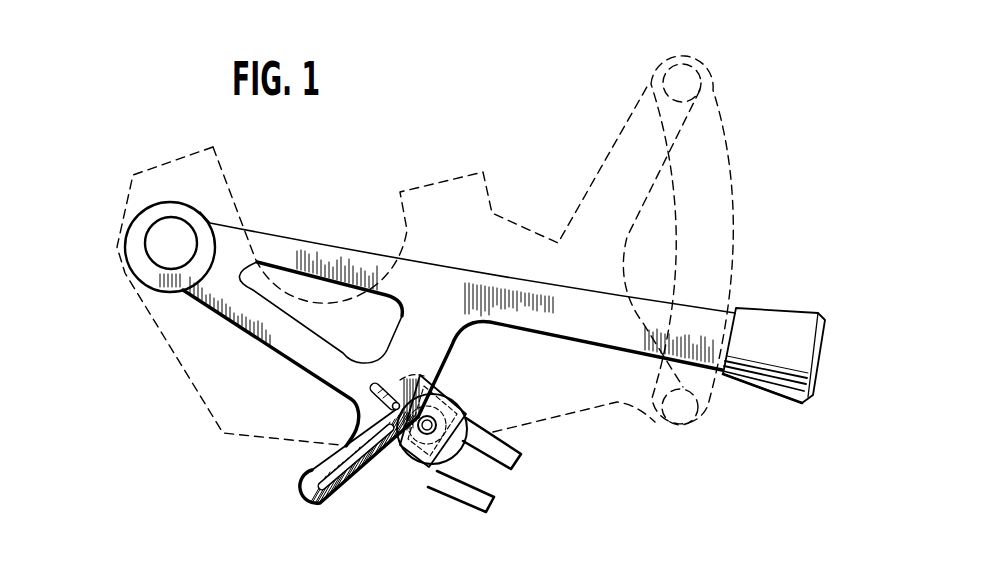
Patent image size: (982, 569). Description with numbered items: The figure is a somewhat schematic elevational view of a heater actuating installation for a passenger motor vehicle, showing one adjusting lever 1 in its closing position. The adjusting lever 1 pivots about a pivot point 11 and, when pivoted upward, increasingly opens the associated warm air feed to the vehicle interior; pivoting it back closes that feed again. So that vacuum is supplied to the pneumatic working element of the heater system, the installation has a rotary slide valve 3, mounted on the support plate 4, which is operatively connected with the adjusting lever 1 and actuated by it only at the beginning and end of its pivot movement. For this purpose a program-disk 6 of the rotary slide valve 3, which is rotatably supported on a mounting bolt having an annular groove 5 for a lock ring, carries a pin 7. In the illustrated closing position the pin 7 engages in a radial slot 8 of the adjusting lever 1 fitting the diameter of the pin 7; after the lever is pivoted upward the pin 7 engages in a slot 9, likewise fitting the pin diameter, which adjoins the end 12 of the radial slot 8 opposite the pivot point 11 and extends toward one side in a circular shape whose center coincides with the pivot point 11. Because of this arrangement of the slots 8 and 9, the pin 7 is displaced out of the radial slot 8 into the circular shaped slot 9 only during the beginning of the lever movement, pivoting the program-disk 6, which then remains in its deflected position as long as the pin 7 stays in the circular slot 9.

The adjusting lever 1 is at (325, 256).
The rotary slide valve 3 is at (423, 472).
The support plate 4 is at (477, 193).
The annular groove 5 is at (452, 408).
The program-disk 6 is at (447, 393).
The pin 7 is at (388, 412).
The radial slot 8 is at (376, 390).
The circular shaped slot 9 is at (348, 467).
The pivot point 11 is at (158, 238).
The end of the radial slot 12 is at (413, 388).